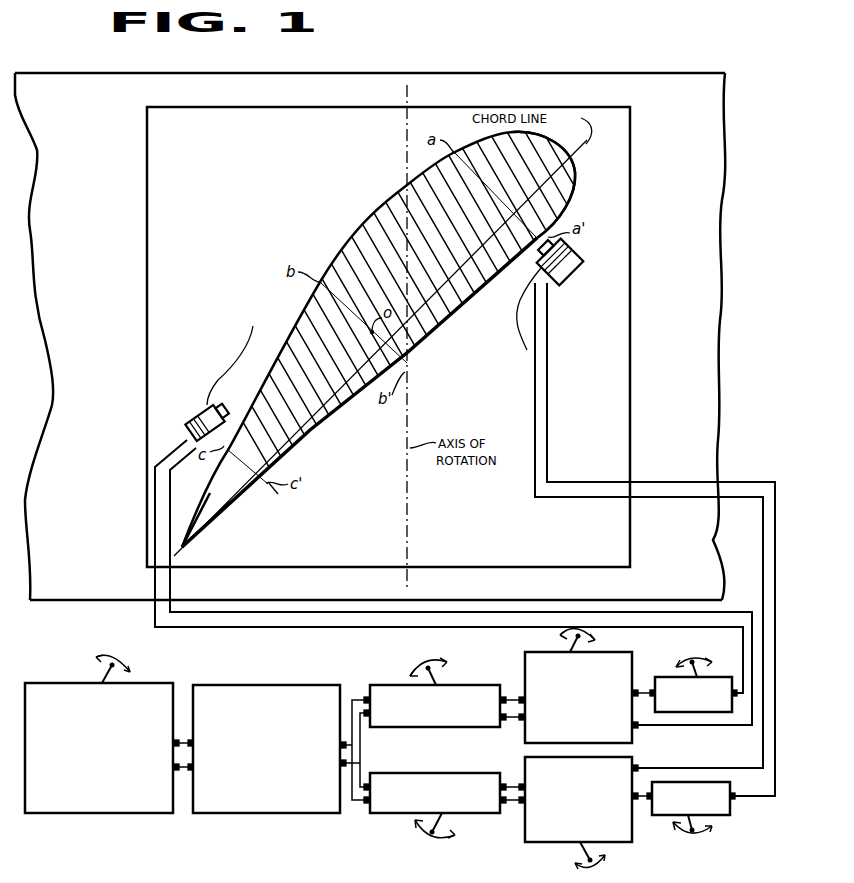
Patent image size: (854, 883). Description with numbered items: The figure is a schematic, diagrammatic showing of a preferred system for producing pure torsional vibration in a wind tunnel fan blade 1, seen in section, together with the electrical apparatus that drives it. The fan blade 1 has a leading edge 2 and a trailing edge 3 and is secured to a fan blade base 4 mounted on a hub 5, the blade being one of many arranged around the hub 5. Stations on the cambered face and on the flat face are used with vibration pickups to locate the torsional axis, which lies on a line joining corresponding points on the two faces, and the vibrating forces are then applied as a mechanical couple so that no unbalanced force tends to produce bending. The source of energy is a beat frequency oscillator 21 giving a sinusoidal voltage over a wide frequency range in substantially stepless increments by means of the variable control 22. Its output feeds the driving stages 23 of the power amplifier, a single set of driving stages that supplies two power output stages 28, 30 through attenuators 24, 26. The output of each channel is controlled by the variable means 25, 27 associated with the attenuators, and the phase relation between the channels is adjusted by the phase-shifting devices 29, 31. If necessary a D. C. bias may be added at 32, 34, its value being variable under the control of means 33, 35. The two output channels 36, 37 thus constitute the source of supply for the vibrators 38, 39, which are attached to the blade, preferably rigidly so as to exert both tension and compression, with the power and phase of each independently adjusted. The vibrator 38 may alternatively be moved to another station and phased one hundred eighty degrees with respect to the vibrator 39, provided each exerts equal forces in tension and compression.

The fan blade 1 is at (398, 192).
The leading edge 2 is at (576, 160).
The trailing edge 3 is at (184, 548).
The fan blade base 4 is at (147, 374).
The hub 5 is at (55, 400).
The beat frequency oscillator 21 is at (116, 813).
The variable control 22 is at (103, 672).
The driving stages 23 is at (280, 813).
The attenuator 24 is at (494, 688).
The variable means 25 is at (434, 663).
The attenuator 26 is at (460, 773).
The variable means 27 is at (442, 820).
The power output stage 28 is at (626, 660).
The phase-shifting device 29 is at (570, 645).
The power output stage 30 is at (526, 842).
The phase-shifting device 31 is at (580, 852).
The D. C. bias 32 is at (712, 712).
The control means 33 is at (702, 664).
The D. C. bias 34 is at (732, 810).
The control means 35 is at (700, 826).
The output channel 36 is at (741, 618).
The output channel 37 is at (775, 537).
The vibrator 38 is at (197, 414).
The vibrator 39 is at (580, 246).